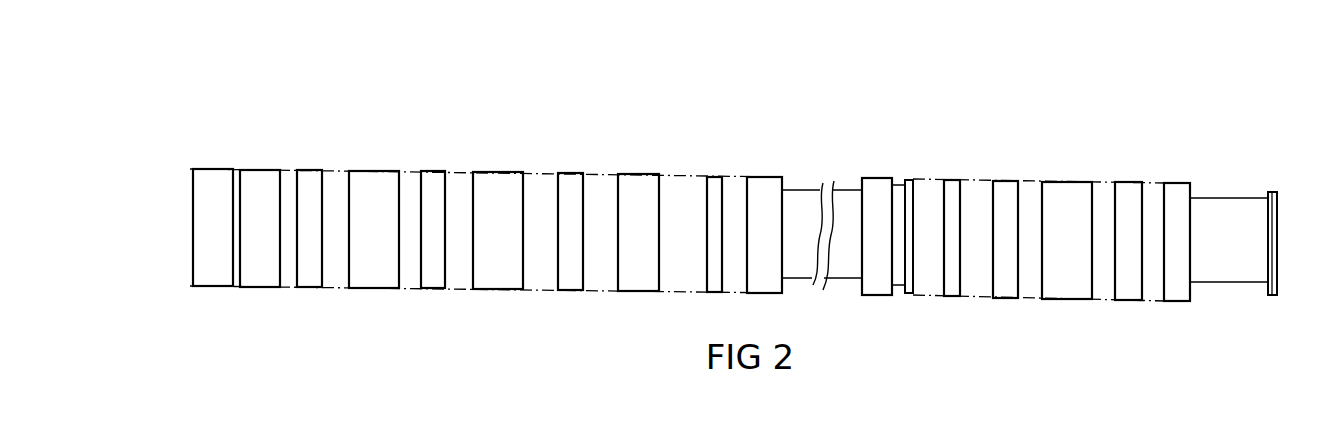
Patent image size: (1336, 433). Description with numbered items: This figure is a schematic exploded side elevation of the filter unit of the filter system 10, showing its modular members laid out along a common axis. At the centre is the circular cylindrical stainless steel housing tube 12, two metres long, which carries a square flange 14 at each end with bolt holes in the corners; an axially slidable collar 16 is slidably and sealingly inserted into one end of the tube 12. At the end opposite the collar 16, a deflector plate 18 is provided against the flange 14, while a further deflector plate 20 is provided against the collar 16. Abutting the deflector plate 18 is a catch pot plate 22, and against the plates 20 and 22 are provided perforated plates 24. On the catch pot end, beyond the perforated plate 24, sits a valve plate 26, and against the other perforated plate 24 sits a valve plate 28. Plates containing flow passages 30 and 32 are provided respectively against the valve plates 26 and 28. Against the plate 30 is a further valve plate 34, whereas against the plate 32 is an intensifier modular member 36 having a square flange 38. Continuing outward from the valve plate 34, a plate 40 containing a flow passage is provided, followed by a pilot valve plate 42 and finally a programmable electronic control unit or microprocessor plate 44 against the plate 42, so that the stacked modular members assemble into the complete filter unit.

The filter system 10 is at (1079, 80).
The housing tube 12 is at (840, 198).
The flange 14 is at (758, 190).
The axially slidable collar 16 is at (900, 188).
The deflector plate 18 is at (713, 183).
The deflector plate 20 is at (950, 190).
The catch pot plate 22 is at (638, 188).
The perforated plate 24 is at (568, 188).
The valve plate 26 is at (493, 188).
The valve plate 28 is at (1062, 203).
The plate containing flow passages 30 is at (428, 182).
The plate containing flow passages 32 is at (1130, 195).
The valve plate 34 is at (370, 185).
The intensifier modular member 36 is at (1250, 193).
The flange 38 is at (1172, 200).
The plate containing a flow passage 40 is at (306, 182).
The pilot valve plate 42 is at (259, 189).
The programmable electronic control unit or microprocessor plate 44 is at (210, 187).